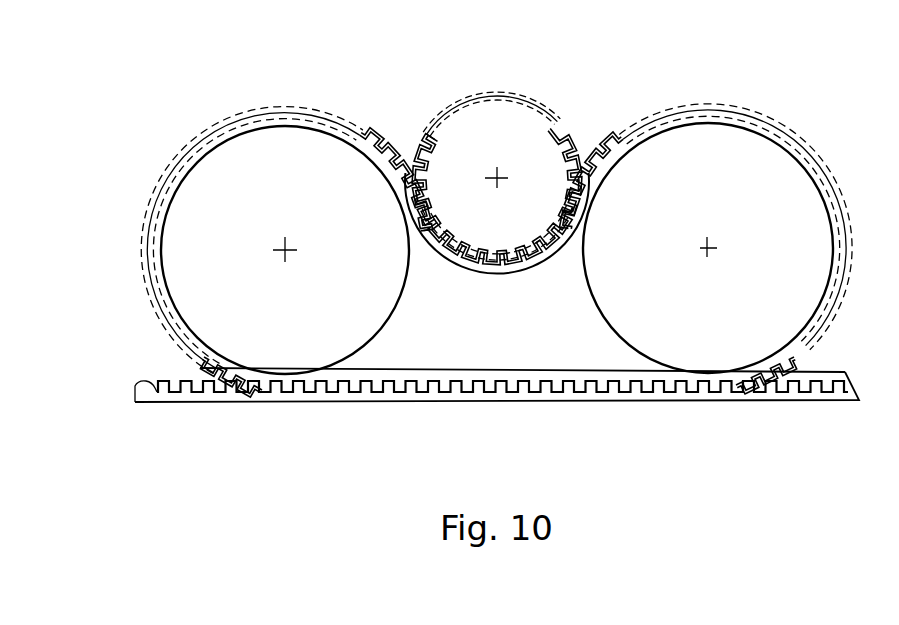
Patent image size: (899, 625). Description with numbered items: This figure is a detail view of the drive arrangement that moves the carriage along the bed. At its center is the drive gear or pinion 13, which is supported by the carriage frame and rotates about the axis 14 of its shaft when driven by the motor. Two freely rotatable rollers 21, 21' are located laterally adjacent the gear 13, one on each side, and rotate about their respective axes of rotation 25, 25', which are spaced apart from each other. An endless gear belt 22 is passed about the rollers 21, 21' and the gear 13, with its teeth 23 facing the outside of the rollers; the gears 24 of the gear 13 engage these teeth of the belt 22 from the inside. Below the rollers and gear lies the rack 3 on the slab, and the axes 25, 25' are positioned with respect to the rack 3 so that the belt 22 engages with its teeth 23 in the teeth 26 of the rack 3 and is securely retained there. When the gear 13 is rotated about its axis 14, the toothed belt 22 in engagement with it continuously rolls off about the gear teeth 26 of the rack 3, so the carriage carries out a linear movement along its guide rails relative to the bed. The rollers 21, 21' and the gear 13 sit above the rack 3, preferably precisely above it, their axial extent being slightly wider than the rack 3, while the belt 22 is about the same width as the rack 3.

The rack 3 is at (277, 397).
The drive gear 13 is at (502, 130).
The axis 14 is at (500, 176).
The roller 21 is at (286, 207).
The roller 21' is at (736, 221).
The gear belt 22 is at (163, 215).
The teeth of the belt 23 is at (200, 368).
The gears of the gear 24 is at (560, 124).
The axis of rotation 25 is at (310, 228).
The axis of rotation 25' is at (734, 221).
The teeth of the rack 26 is at (137, 395).